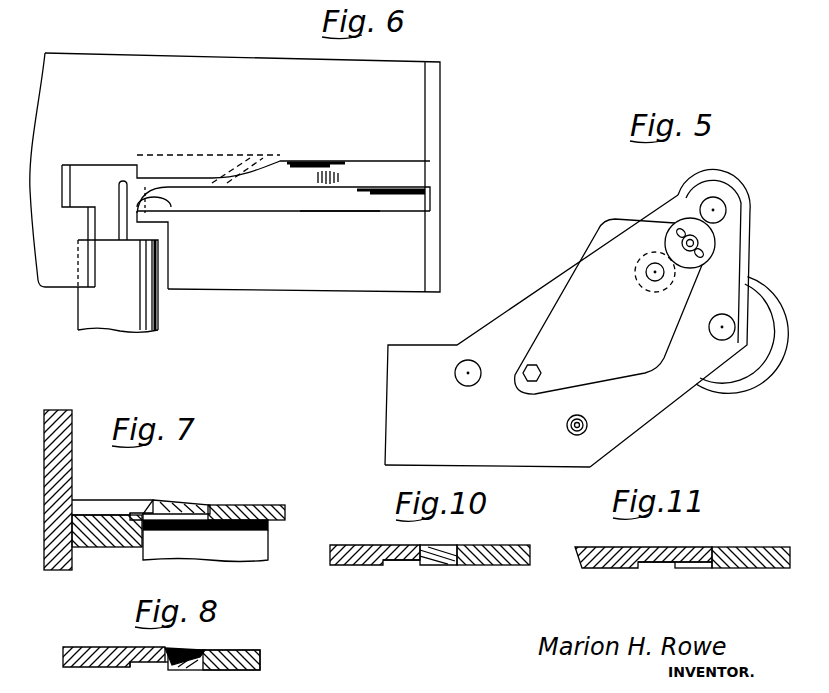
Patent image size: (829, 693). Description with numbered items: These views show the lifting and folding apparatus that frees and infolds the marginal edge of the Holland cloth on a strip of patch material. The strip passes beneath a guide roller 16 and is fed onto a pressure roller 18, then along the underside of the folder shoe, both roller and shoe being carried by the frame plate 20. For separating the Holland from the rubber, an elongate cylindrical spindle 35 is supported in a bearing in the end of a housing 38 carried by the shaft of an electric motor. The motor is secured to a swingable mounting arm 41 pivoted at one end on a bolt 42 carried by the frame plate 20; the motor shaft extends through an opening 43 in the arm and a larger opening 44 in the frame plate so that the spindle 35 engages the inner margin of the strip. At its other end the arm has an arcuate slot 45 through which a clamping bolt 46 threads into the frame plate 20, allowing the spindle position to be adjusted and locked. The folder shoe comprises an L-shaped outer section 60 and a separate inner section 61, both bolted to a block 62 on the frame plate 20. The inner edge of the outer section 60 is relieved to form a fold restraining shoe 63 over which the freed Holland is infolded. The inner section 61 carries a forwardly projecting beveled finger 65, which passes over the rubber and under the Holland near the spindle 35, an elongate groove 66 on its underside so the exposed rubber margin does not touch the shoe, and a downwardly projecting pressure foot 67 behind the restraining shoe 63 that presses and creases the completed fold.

In FIG. 5, the guide roller 16 is at (752, 202).
In FIG. 5, the pressure roller 18 is at (726, 392).
In FIG. 7, the frame plate 20 is at (67, 420).
In FIG. 6, the spindle 35 is at (118, 191).
In FIG. 6, the housing 38 is at (85, 307).
In FIG. 5, the swingable mounting arm 41 is at (547, 290).
In FIG. 5, the bolt 42 is at (542, 366).
In FIG. 5, the opening 43 is at (652, 284).
In FIG. 5, the opening 44 is at (635, 275).
In FIG. 5, the arcuate slot 45 is at (717, 263).
In FIG. 5, the clamping bolt 46 is at (680, 196).
In FIG. 6, the outer section 60 is at (403, 107).
In FIG. 7, the outer section 60 is at (260, 505).
In FIG. 8, the outer section 60 is at (260, 660).
In FIG. 10, the outer section 60 is at (492, 568).
In FIG. 11, the outer section 60 is at (760, 568).
In FIG. 6, the inner section 61 is at (397, 253).
In FIG. 7, the inner section 61 is at (113, 484).
In FIG. 8, the inner section 61 is at (97, 647).
In FIG. 10, the inner section 61 is at (350, 568).
In FIG. 11, the inner section 61 is at (598, 568).
In FIG. 7, the block 62 is at (120, 550).
In FIG. 6, the fold restraining shoe 63 is at (173, 166).
In FIG. 7, the fold restraining shoe 63 is at (240, 485).
In FIG. 8, the fold restraining shoe 63 is at (192, 650).
In FIG. 10, the fold restraining shoe 63 is at (440, 568).
In FIG. 6, the finger 65 is at (170, 212).
In FIG. 8, the finger 65 is at (150, 668).
In FIG. 6, the groove 66 is at (337, 214).
In FIG. 7, the groove 66 is at (152, 502).
In FIG. 8, the groove 66 is at (133, 672).
In FIG. 10, the groove 66 is at (398, 568).
In FIG. 11, the groove 66 is at (653, 568).
In FIG. 6, the pressure foot 67 is at (395, 177).
In FIG. 11, the pressure foot 67 is at (693, 570).